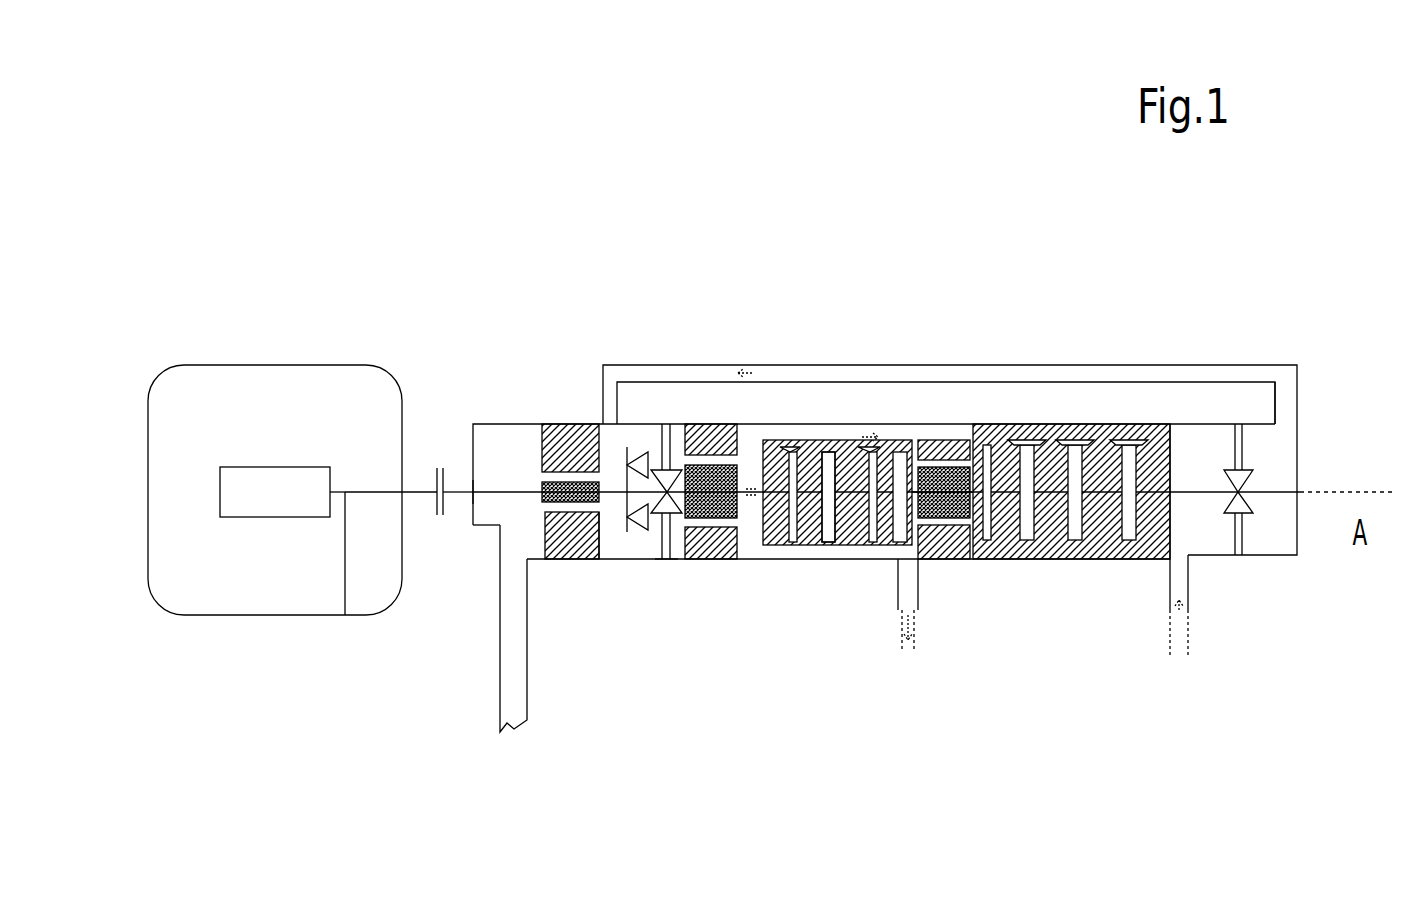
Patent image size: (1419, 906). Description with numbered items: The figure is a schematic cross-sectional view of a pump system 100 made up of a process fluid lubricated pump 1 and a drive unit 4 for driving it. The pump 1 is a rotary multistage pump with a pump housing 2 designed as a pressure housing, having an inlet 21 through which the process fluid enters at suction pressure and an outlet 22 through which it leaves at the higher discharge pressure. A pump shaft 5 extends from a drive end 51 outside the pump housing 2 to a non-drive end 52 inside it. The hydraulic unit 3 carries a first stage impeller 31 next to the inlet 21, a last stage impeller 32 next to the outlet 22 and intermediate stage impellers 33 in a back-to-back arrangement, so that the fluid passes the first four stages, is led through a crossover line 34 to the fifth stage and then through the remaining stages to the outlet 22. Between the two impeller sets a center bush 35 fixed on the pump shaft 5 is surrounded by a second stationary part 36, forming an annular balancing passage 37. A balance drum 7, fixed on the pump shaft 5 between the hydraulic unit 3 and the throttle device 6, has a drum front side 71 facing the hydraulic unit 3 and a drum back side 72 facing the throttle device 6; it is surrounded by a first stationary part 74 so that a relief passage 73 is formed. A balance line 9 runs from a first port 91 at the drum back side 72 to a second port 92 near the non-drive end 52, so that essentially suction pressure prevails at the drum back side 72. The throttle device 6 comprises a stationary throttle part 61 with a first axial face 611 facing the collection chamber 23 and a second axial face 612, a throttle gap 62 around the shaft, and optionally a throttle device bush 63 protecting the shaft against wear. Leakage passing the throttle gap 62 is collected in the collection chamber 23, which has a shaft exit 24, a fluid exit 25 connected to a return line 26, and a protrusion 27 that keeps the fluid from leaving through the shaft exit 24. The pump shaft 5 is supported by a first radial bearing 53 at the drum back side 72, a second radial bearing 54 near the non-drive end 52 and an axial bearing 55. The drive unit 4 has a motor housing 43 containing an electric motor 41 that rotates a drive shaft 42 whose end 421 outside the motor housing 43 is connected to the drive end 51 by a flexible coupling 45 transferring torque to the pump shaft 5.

The pump system 100 is at (706, 177).
The process fluid lubricated pump 1 is at (914, 273).
The pump housing 2 is at (485, 416).
The inlet 21 is at (1168, 570).
The outlet 22 is at (893, 590).
The collection chamber 23 is at (512, 435).
The shaft exit 24 is at (470, 490).
The fluid exit 25 is at (510, 565).
The return line 26 is at (528, 683).
The protrusion 27 is at (497, 558).
The hydraulic unit 3 is at (966, 489).
The first stage impeller 31 is at (1128, 424).
The last stage impeller 32 is at (938, 506).
The intermediate stage impeller 33 is at (790, 440).
The crossover line 34 is at (836, 447).
The center bush 35 is at (943, 445).
The second stationary part 36 is at (935, 561).
The balancing passage 37 is at (957, 561).
The drive unit 4 is at (261, 355).
The electric motor 41 is at (235, 483).
The drive shaft 42 is at (345, 615).
The end of the drive shaft 421 is at (427, 497).
The motor housing 43 is at (241, 616).
The coupling 45 is at (438, 467).
The pump shaft 5 is at (1192, 496).
The drive end 51 is at (456, 497).
The non-drive end 52 is at (1270, 490).
The first radial bearing 53 is at (669, 466).
The second radial bearing 54 is at (1247, 500).
The axial bearing 55 is at (663, 561).
The throttle device 6 is at (585, 495).
The stationary throttle part 61 is at (583, 424).
The first axial face 611 is at (526, 564).
The second axial face 612 is at (600, 562).
The throttle gap 62 is at (603, 505).
The throttle device bush 63 is at (541, 472).
The balance drum 7 is at (737, 479).
The drum front side 71 is at (745, 445).
The drum back side 72 is at (631, 455).
The relief passage 73 is at (704, 559).
The first stationary part 74 is at (717, 424).
The balance line 9 is at (1200, 355).
The first port 91 is at (621, 445).
The second port 92 is at (1283, 423).